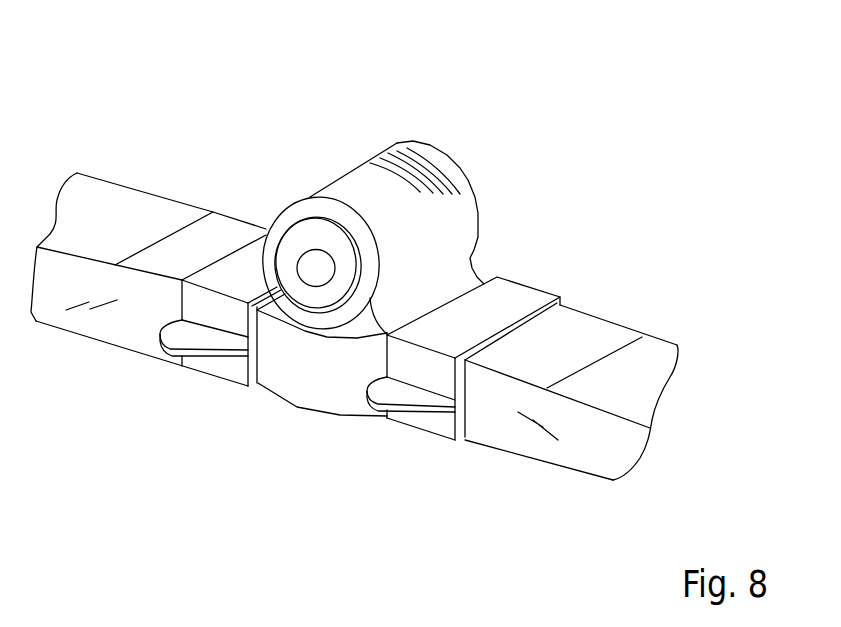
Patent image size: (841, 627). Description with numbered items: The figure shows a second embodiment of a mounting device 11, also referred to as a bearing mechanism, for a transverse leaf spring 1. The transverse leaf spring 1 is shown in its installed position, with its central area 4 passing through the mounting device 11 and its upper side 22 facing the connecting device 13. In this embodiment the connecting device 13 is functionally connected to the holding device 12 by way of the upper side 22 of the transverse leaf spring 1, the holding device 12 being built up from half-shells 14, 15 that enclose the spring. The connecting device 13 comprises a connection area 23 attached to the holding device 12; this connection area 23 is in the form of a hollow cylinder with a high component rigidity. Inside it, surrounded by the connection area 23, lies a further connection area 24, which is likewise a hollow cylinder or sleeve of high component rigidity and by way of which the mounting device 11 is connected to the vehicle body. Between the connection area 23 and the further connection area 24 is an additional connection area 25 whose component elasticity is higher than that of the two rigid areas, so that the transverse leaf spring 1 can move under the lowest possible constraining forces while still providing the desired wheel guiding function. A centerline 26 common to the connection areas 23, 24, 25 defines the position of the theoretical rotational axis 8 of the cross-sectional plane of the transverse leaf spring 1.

The transverse leaf spring 1 is at (374, 306).
The central area of the transverse leaf spring 4 is at (286, 436).
The theoretical rotational axis 8 is at (315, 267).
The mounting device 11 is at (360, 306).
The holding device 12 is at (470, 180).
The connecting device 13 is at (419, 456).
The half-shell 14 is at (253, 268).
The half-shell 15 is at (223, 370).
The upper side of the transverse leaf spring 22 is at (186, 247).
The connection area 23 is at (368, 187).
The further connection area 24 is at (327, 300).
The additional connection area 25 is at (307, 213).
The centerline 26 is at (250, 420).